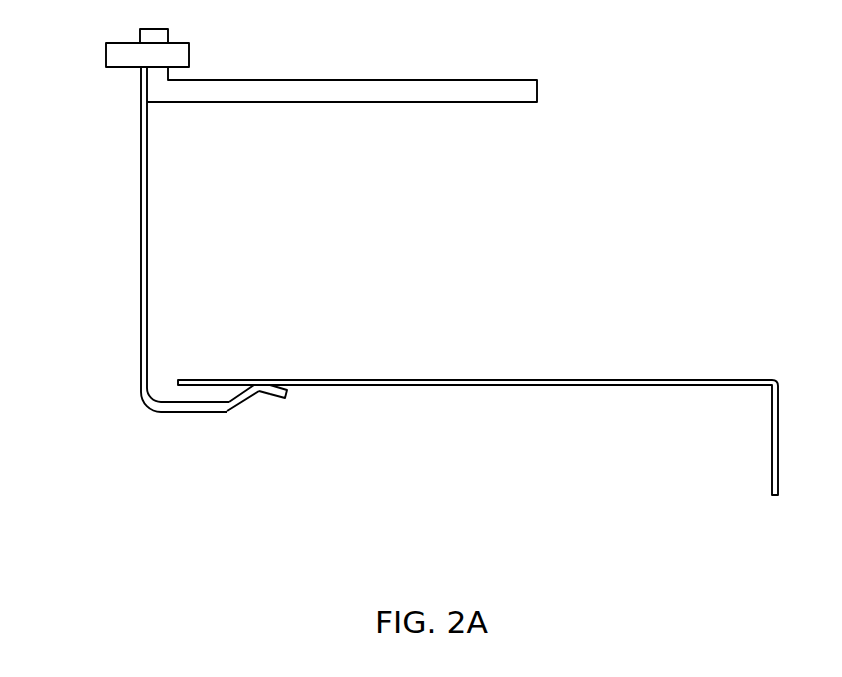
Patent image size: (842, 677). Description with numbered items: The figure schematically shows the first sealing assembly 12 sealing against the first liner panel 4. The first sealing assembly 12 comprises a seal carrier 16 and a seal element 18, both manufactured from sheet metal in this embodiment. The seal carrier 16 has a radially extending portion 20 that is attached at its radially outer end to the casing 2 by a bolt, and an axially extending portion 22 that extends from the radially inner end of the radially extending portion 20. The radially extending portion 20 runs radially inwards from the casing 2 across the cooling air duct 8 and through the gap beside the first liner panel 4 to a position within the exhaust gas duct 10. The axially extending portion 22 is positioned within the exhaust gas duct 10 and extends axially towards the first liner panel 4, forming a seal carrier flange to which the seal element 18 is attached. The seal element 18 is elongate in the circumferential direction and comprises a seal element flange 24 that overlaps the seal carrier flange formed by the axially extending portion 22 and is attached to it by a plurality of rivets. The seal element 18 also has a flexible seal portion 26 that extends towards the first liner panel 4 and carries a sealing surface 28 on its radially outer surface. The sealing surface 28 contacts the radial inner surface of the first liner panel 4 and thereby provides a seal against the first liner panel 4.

The casing 2 is at (337, 80).
The first liner panel 4 is at (520, 380).
The cooling air duct 8 is at (533, 228).
The exhaust gas duct 10 is at (591, 482).
The first sealing assembly 12 is at (185, 250).
The seal carrier 16 is at (148, 285).
The seal element 18 is at (269, 407).
The radially extending portion 20 is at (148, 215).
The axially extending portion 22 is at (170, 413).
The seal element flange 24 is at (170, 401).
The flexible seal portion 26 is at (237, 406).
The sealing surface 28 is at (263, 386).